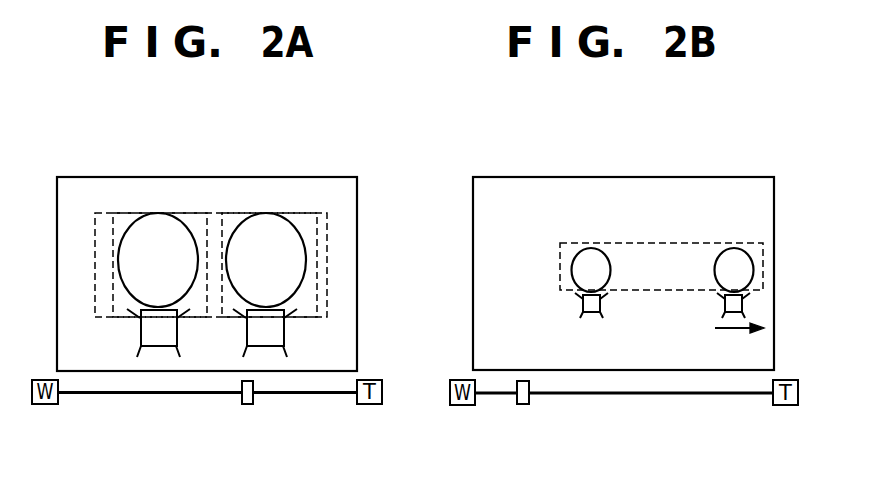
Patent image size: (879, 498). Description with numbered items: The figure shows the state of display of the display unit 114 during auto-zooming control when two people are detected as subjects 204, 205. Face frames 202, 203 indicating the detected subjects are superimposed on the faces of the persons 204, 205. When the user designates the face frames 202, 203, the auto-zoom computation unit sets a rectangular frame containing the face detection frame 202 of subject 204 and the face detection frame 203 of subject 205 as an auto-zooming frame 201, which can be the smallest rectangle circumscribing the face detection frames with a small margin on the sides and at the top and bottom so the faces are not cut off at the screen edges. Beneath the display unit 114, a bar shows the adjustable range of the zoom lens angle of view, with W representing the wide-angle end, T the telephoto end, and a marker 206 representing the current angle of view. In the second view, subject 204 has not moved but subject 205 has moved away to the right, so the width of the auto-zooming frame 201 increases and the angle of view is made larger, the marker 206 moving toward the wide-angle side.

In FIG. 2A, the display unit 114 is at (357, 268).
In FIG. 2B, the display unit 114 is at (473, 217).
In FIG. 2A, the auto-zooming frame 201 is at (320, 213).
In FIG. 2B, the auto-zooming frame 201 is at (660, 243).
In FIG. 2A, the face frame 202 is at (112, 234).
In FIG. 2A, the face frame 203 is at (320, 305).
In FIG. 2A, the subject 204 is at (137, 232).
In FIG. 2B, the subject 204 is at (592, 255).
In FIG. 2A, the subject 205 is at (244, 232).
In FIG. 2B, the subject 205 is at (727, 257).
In FIG. 2A, the current angle of view 206 is at (248, 404).
In FIG. 2B, the current angle of view 206 is at (522, 404).